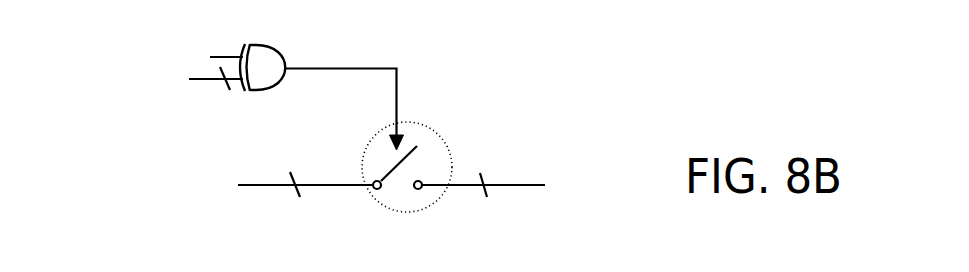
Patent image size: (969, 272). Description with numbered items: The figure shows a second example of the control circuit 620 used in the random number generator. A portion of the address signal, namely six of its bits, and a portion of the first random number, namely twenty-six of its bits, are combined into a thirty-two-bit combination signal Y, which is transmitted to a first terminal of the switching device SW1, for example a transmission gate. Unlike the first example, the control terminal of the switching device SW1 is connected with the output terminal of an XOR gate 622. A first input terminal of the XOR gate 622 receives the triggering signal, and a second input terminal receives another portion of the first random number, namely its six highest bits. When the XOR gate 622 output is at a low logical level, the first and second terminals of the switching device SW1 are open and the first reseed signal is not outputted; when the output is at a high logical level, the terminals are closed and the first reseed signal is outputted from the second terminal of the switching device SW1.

The control circuit 620 is at (604, 128).
The XOR gate 622 is at (262, 43).
The switching device SW1 is at (407, 188).
The combination signal Y is at (300, 198).